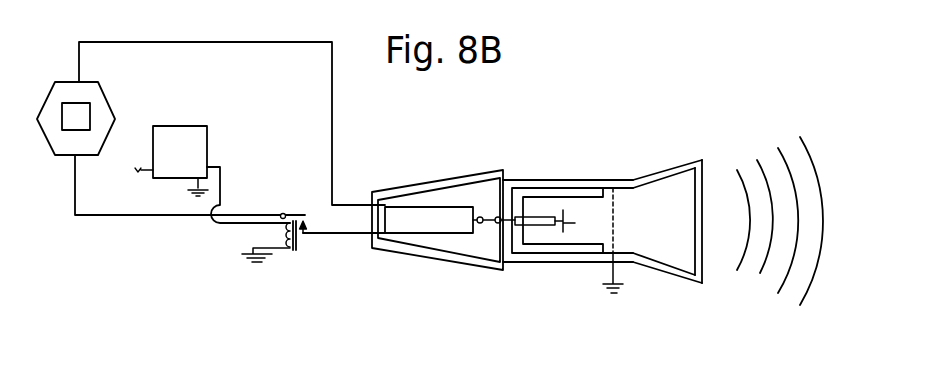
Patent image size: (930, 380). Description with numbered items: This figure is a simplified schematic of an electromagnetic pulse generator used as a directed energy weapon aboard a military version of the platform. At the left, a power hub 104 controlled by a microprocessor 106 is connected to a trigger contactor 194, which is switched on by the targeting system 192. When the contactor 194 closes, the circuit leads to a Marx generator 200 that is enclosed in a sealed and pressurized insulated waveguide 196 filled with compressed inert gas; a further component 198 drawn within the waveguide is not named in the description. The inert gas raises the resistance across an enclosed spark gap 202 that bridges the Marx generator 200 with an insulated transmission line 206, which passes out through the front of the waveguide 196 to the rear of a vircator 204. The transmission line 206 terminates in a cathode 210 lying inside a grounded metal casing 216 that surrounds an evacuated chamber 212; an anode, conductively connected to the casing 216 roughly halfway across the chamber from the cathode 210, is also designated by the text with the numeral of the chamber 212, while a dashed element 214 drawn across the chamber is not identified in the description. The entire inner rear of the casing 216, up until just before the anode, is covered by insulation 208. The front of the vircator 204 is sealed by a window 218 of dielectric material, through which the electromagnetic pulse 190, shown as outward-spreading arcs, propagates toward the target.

The power hub 104 is at (72, 95).
The microprocessor 106 is at (75, 122).
The targeting system 192 is at (182, 147).
The trigger contactor 194 is at (283, 250).
The insulated waveguide 196 is at (432, 180).
The backing layer 198 is at (463, 193).
The Marx generator 200 is at (412, 220).
The spark gap 202 is at (487, 225).
The vircator 204 is at (548, 164).
The insulated transmission line 206 is at (540, 224).
The insulation 208 is at (580, 190).
The cathode 210 is at (575, 223).
The evacuated chamber 212 is at (672, 236).
The membrane 214 is at (615, 200).
The metal casing 216 is at (682, 281).
The window 218 is at (702, 192).
The electromagnetic pulse 190 is at (760, 274).